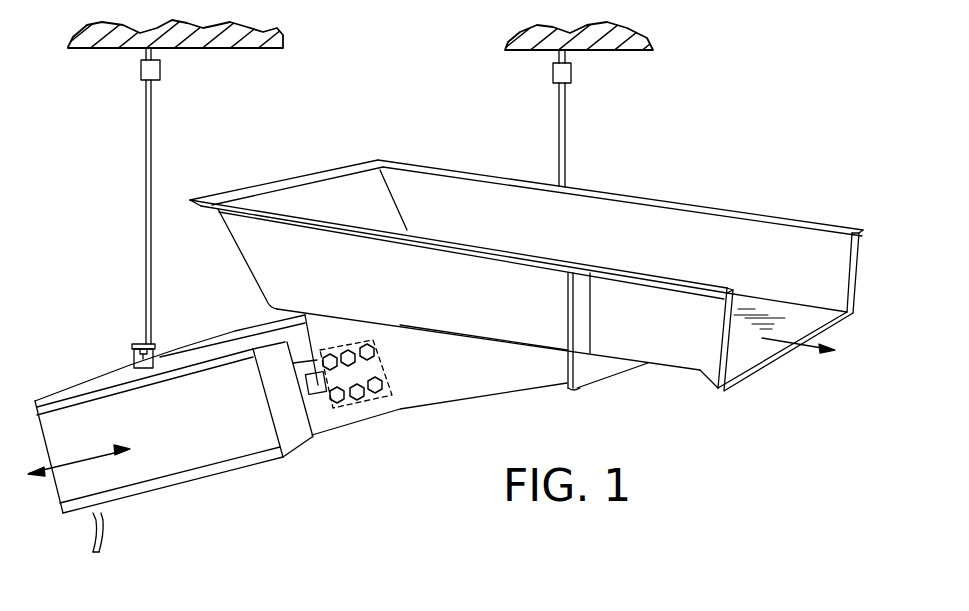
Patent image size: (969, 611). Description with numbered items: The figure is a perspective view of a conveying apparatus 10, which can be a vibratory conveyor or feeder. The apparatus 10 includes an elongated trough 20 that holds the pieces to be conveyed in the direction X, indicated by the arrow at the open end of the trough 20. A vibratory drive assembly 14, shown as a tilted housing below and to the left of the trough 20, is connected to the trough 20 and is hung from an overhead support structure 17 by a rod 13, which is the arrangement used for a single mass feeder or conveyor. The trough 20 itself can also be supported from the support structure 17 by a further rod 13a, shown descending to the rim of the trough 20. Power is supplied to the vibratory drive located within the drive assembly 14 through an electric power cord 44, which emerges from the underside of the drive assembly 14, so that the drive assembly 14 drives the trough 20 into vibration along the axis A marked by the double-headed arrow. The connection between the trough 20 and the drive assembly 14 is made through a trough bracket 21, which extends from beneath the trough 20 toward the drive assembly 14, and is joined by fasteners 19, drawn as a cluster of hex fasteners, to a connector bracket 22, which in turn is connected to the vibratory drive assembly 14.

The conveying apparatus 10 is at (681, 93).
The rods 13 is at (146, 196).
The rods 13a is at (565, 125).
The vibratory drive assembly 14 is at (224, 491).
The support structure 17 is at (110, 50).
The fasteners 19 is at (375, 357).
The trough 20 is at (681, 191).
The trough brackets 21 is at (515, 390).
The connector brackets 22 is at (387, 407).
The electric power cord 44 is at (103, 539).